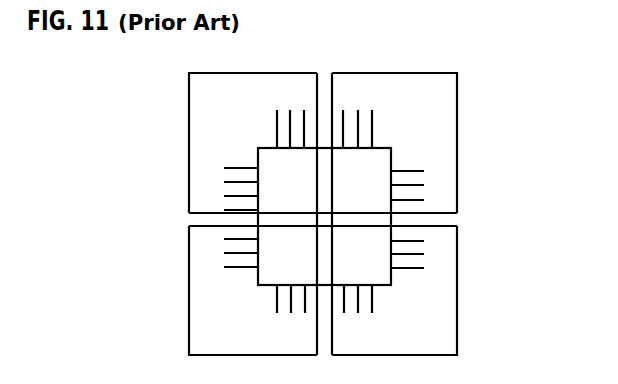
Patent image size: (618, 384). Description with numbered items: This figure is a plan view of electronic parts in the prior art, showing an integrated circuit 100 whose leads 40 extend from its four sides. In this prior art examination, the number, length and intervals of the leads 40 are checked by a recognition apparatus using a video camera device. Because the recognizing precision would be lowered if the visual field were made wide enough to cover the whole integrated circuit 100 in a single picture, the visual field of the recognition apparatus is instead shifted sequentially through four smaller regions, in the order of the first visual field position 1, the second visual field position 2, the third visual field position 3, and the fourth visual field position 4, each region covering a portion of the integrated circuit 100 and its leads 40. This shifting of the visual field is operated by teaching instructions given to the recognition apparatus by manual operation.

The first visual field position 1 is at (253, 143).
The second visual field position 2 is at (394, 143).
The third visual field position 3 is at (253, 290).
The fourth visual field position 4 is at (394, 290).
The leads 40 is at (413, 170).
The integrated circuit 100 is at (371, 269).